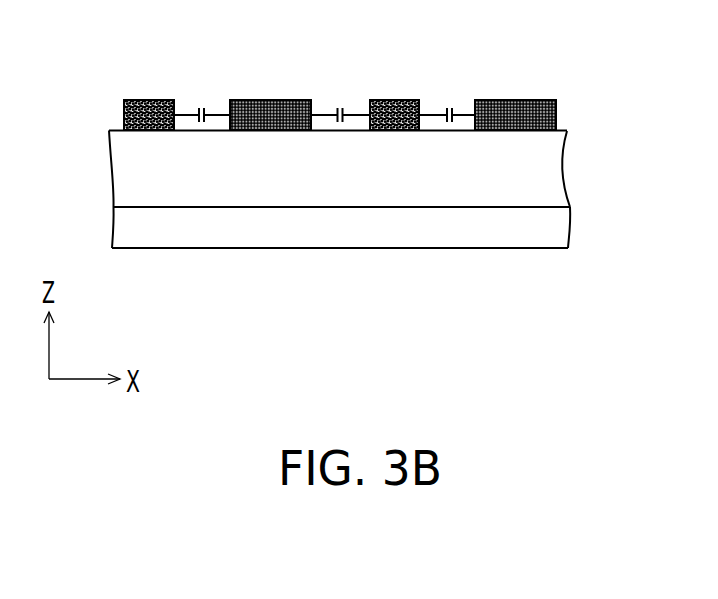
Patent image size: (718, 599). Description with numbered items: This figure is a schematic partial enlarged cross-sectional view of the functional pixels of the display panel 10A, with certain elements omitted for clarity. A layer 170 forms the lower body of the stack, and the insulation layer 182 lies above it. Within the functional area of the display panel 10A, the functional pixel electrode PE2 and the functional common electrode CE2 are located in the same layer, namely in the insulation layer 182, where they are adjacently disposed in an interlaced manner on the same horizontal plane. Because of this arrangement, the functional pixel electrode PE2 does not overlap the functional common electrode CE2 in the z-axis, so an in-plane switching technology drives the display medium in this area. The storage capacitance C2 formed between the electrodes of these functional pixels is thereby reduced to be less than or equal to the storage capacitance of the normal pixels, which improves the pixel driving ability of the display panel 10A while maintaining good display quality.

The display panel 10A is at (692, 394).
The insulation layer 182 is at (118, 152).
The substrate 170 is at (123, 228).
The functional pixel electrode PE2 is at (152, 107).
The functional common electrode CE2 is at (268, 107).
The storage capacitance C2 is at (202, 92).